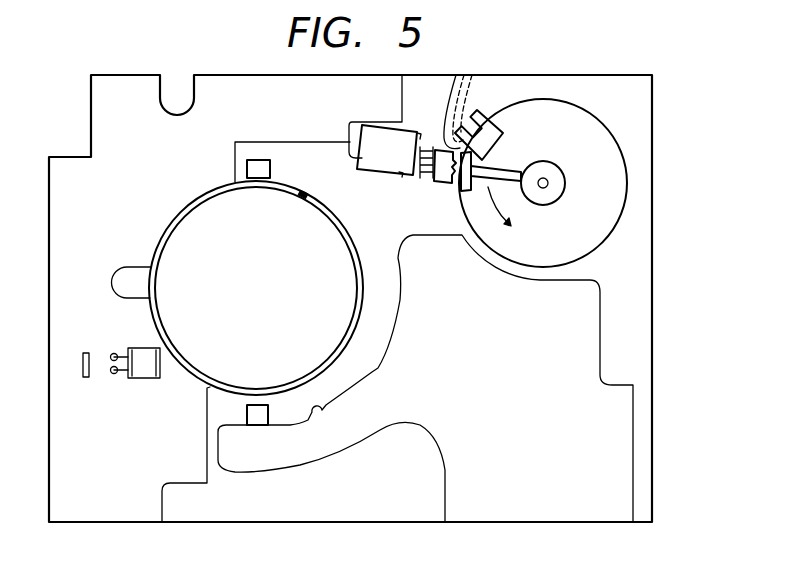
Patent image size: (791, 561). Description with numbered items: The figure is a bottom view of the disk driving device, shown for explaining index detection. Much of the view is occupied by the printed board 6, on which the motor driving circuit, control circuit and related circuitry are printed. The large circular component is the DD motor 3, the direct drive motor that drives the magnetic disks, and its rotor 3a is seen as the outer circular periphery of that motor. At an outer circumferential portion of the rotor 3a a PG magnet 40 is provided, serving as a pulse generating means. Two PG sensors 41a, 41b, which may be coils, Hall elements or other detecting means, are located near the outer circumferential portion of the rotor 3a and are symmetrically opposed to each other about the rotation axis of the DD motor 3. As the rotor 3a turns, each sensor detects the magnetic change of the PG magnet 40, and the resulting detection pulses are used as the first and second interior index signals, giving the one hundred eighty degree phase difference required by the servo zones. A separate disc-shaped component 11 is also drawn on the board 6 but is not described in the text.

The printed board 6 is at (652, 276).
The DD motor 3 is at (340, 257).
The rotor 3a is at (332, 222).
The PG magnet 40 is at (304, 195).
The PG sensor 41a is at (250, 170).
The PG sensor 41b is at (250, 410).
The reel disc 11 is at (604, 120).